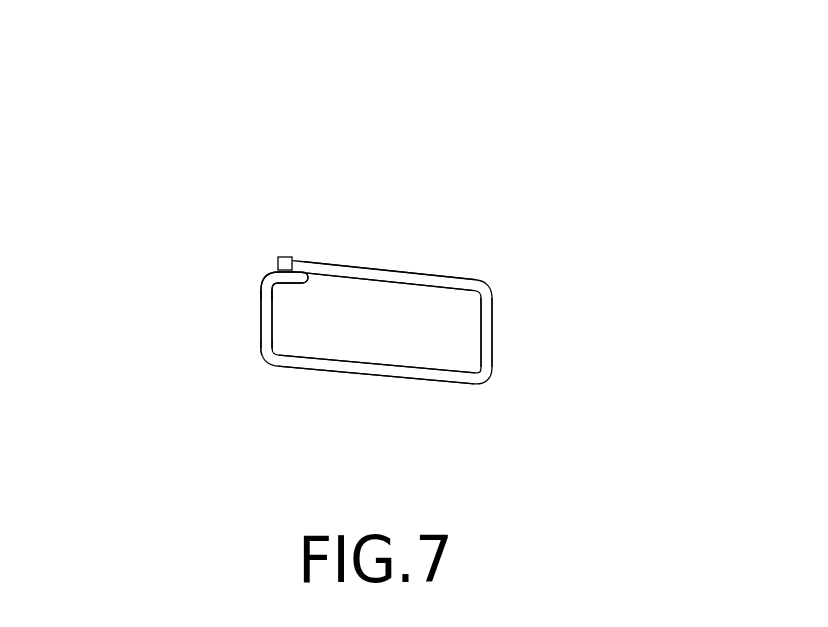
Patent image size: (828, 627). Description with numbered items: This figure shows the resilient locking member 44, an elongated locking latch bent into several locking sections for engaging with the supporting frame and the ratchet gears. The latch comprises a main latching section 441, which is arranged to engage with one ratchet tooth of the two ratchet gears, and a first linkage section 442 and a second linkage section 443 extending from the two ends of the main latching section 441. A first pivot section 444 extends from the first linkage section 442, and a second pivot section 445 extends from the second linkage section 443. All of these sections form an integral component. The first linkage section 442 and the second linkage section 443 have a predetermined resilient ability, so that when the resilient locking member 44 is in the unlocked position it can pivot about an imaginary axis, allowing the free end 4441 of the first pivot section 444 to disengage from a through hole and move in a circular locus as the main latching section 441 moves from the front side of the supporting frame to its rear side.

The resilient locking member 44 is at (487, 348).
The main latching section 441 is at (362, 387).
The first linkage section 442 is at (500, 315).
The second linkage section 443 is at (250, 328).
The first pivot section 444 is at (373, 260).
The second pivot section 445 is at (295, 250).
The free end 4441 is at (268, 257).